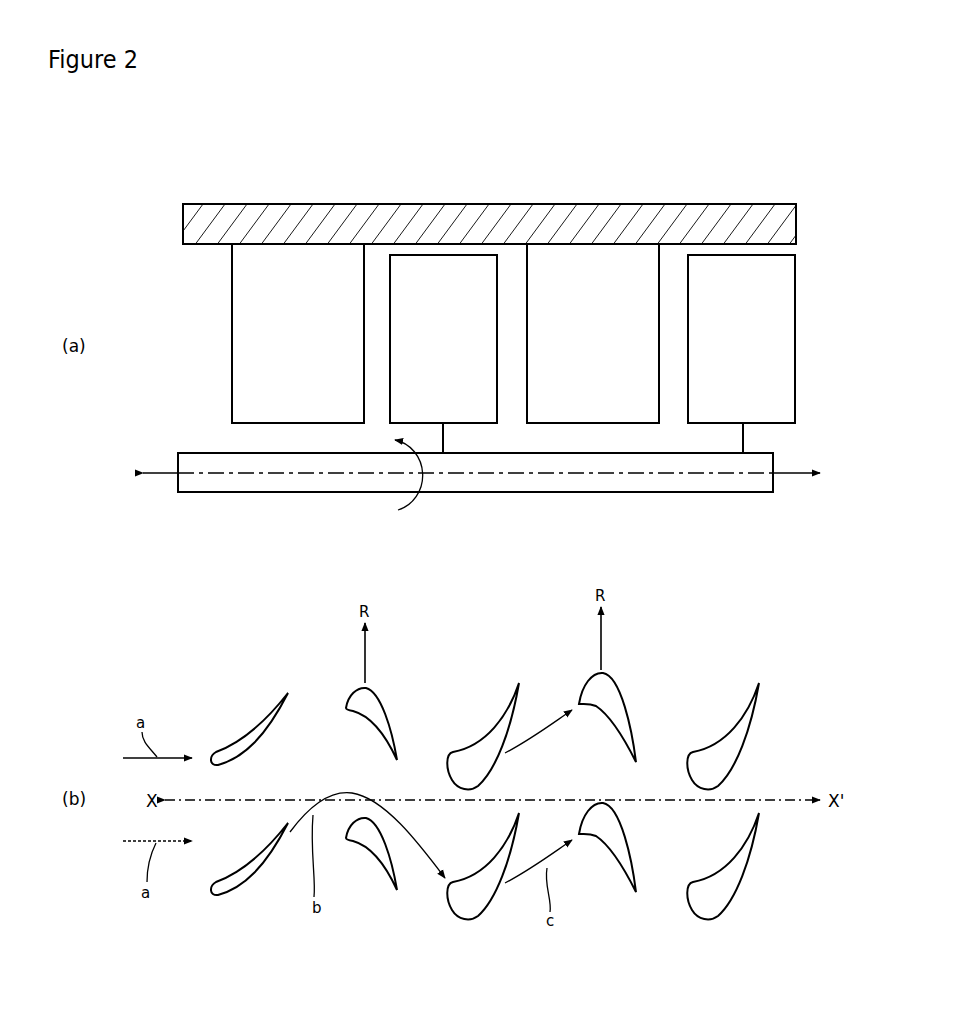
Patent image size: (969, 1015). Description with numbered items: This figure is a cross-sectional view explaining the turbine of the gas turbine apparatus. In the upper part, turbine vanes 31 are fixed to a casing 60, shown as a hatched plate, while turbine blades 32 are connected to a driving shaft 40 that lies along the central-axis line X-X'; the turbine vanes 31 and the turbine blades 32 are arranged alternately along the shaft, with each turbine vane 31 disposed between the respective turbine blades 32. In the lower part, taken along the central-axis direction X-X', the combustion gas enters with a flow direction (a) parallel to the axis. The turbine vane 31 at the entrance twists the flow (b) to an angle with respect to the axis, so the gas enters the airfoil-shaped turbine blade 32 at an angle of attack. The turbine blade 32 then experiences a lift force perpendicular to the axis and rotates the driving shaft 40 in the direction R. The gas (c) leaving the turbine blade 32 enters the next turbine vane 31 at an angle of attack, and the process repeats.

The turbine vane 31 is at (231, 334).
The turbine blade 32 is at (389, 266).
The driving shaft 40 is at (193, 493).
The casing 60 is at (196, 204).